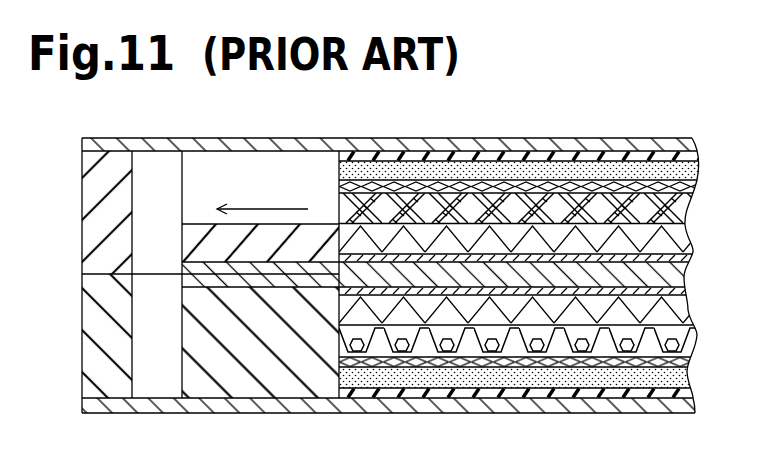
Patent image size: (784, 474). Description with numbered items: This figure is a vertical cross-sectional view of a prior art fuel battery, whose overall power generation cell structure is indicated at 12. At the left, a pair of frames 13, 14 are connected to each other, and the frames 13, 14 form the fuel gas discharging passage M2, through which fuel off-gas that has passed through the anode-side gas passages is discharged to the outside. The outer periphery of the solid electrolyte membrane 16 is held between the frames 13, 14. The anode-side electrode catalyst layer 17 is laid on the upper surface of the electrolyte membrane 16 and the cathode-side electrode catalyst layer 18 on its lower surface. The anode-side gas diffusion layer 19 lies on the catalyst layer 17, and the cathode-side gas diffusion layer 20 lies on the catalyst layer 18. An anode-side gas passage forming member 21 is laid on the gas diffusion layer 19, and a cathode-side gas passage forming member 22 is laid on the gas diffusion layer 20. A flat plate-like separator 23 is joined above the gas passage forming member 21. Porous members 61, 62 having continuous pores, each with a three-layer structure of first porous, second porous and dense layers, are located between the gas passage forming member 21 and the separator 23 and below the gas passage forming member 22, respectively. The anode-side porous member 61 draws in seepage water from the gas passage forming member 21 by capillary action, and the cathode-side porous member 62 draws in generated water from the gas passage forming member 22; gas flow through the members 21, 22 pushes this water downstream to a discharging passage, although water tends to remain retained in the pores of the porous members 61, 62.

The laminated recording body 12 is at (462, 266).
The frame 13 is at (88, 190).
The frame 14 is at (88, 312).
The solid electrolyte membrane 16 is at (683, 273).
The anode-side electrode catalyst layer 17 is at (685, 257).
The cathode-side electrode catalyst layer 18 is at (684, 292).
The anode-side gas diffusion layer 19 is at (677, 232).
The cathode-side gas diffusion layer 20 is at (684, 322).
The anode-side gas passage forming member 21 is at (538, 207).
The cathode-side gas passage forming member 22 is at (519, 347).
The separator 23 is at (441, 141).
The anode-side porous member 61 is at (603, 168).
The cathode-side porous member 62 is at (592, 374).
The fuel gas discharging passage M2 is at (156, 174).